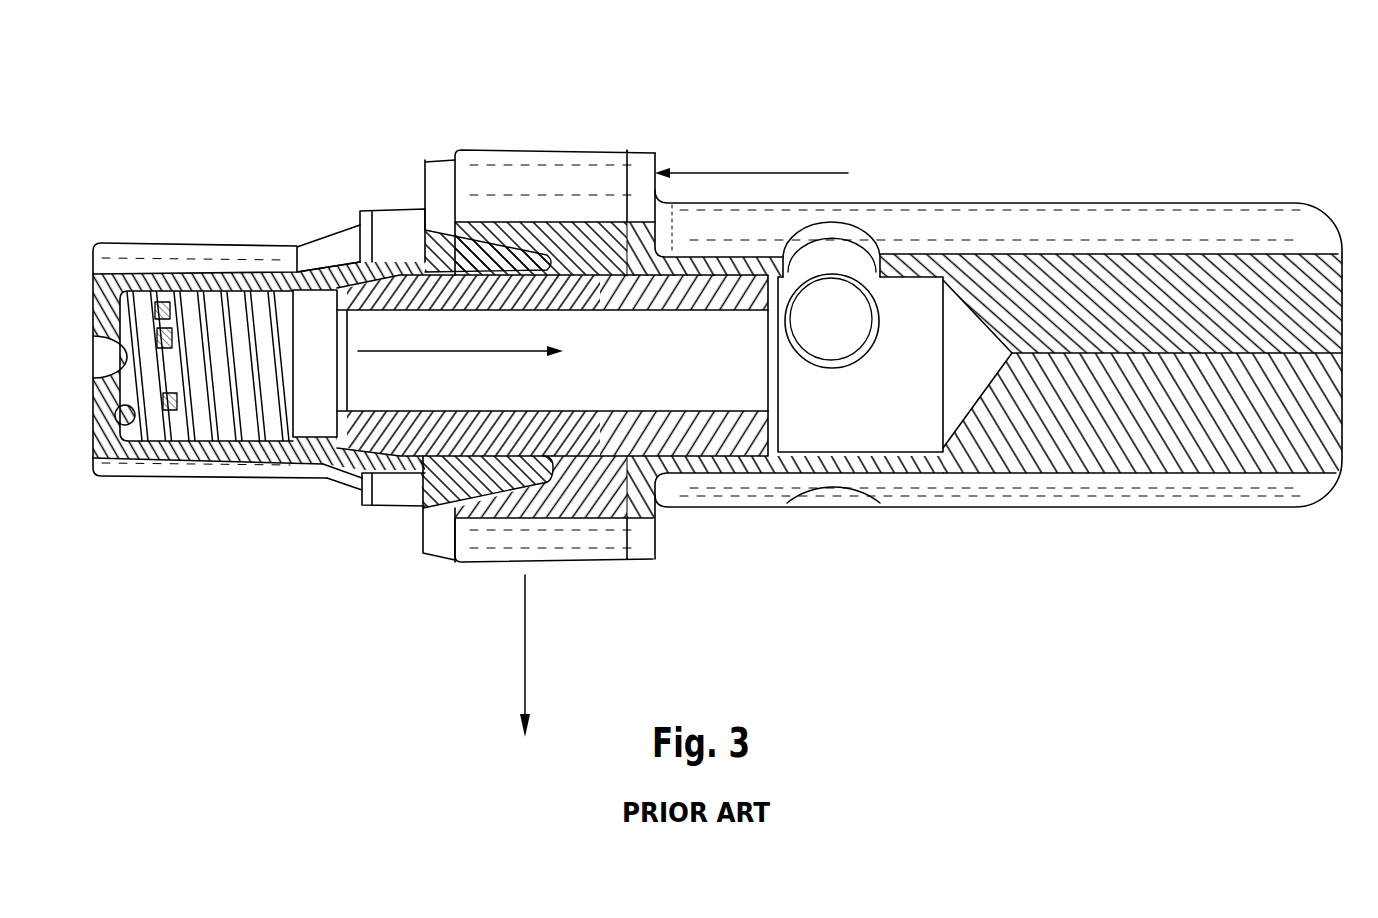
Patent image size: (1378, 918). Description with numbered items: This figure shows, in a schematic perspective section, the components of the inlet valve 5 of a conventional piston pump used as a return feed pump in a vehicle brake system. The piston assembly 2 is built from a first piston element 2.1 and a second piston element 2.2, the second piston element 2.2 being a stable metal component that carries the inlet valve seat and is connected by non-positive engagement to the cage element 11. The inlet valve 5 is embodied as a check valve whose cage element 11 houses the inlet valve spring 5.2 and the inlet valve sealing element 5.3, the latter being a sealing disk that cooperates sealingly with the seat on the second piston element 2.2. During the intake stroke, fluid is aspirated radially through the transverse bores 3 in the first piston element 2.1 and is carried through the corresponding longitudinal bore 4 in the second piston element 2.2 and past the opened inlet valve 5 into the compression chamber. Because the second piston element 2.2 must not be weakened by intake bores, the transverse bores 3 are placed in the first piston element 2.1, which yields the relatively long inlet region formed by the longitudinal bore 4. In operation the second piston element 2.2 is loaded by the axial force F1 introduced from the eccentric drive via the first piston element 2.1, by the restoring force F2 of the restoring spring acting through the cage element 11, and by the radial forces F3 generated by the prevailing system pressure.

The piston assembly 2 is at (1012, 79).
The first piston element 2.1 is at (1103, 427).
The second piston element 2.2 is at (737, 433).
The transverse bores 3 is at (832, 230).
The longitudinal bore 4 is at (660, 380).
The inlet valve 5 is at (364, 320).
The inlet valve spring 5.2 is at (130, 462).
The inlet valve sealing element 5.3 is at (316, 430).
The cage element 11 is at (186, 258).
The axial force F1 is at (747, 173).
The restoring force F2 is at (488, 351).
The radial forces F3 is at (525, 652).